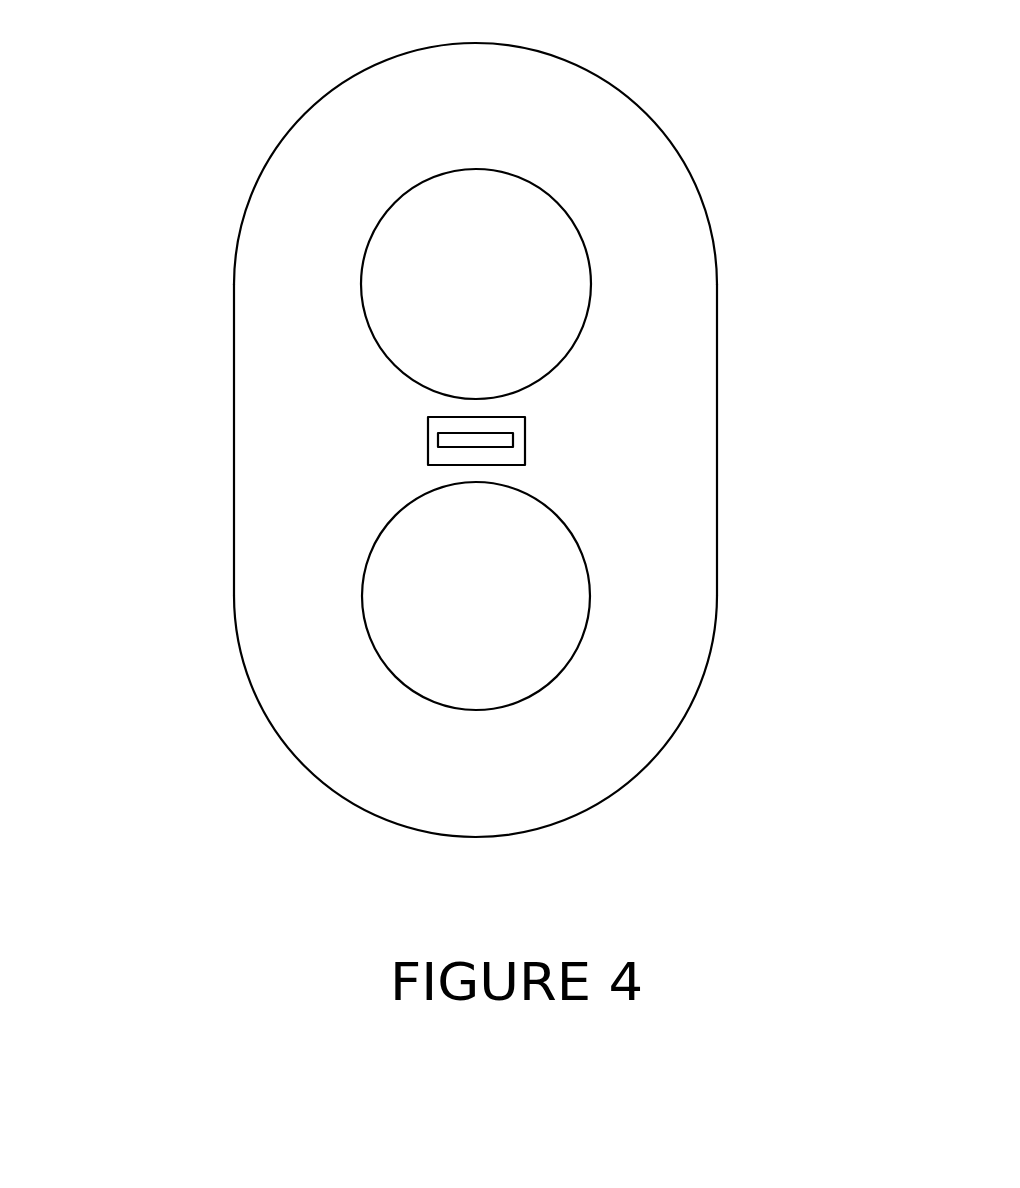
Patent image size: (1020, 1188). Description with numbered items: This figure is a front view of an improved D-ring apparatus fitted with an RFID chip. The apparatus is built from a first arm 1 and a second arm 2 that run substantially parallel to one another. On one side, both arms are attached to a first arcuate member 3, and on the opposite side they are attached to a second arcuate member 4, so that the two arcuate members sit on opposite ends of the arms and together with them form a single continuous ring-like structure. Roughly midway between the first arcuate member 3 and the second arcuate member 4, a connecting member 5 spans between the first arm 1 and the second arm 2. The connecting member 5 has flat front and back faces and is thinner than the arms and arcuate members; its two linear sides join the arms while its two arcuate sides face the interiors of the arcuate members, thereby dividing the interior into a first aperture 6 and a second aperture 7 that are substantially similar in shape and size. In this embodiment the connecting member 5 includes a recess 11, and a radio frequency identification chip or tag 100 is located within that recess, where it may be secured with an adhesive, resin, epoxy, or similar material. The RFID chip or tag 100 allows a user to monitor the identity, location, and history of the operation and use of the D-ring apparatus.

The first arm 1 is at (455, 440).
The second arm 2 is at (544, 440).
The first arcuate member 3 is at (475, 147).
The second arcuate member 4 is at (475, 734).
The connecting member 5 is at (391, 428).
The first aperture 6 is at (525, 284).
The second aperture 7 is at (525, 596).
The RFID chip or tag 100 is at (535, 455).
The recess 11 is at (474, 440).